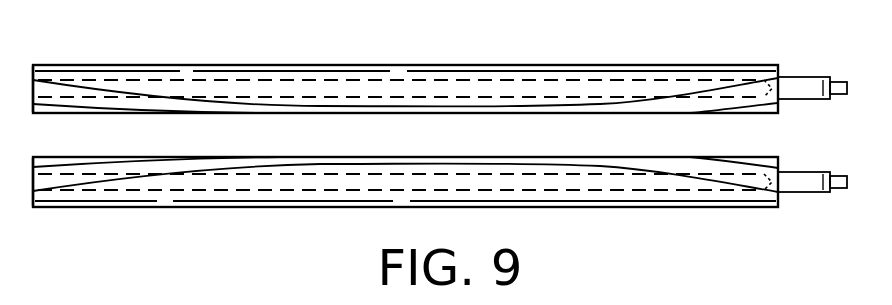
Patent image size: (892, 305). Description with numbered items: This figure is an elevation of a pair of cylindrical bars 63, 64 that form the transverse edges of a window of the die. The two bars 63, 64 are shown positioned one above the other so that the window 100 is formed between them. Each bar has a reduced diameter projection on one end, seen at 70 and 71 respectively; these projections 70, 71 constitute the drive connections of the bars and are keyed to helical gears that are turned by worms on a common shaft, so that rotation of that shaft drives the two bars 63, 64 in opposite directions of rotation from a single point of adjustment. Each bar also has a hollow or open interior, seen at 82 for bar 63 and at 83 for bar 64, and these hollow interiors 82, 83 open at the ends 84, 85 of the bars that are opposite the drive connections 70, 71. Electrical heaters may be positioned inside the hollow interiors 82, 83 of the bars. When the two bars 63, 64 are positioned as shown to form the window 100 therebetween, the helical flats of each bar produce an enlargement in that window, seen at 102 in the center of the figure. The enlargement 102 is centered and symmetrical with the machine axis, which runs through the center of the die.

The cylindrical bar 63 is at (641, 57).
The cylindrical bar 64 is at (640, 218).
The reduced diameter projection 70 is at (800, 77).
The reduced diameter projection 71 is at (815, 192).
The hollow interior 82 is at (226, 80).
The hollow interior 83 is at (297, 190).
The end 84 is at (32, 90).
The end 85 is at (28, 180).
The window 100 is at (665, 142).
The enlargement 102 is at (383, 138).